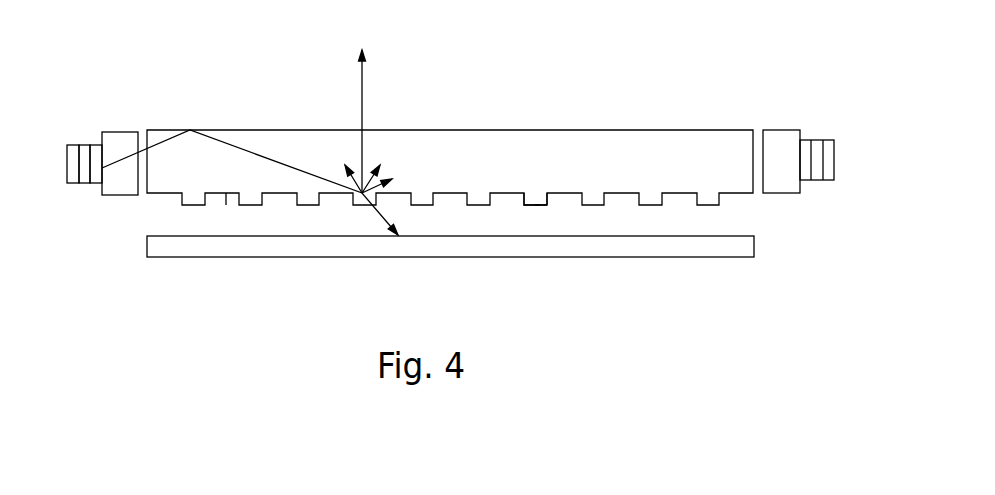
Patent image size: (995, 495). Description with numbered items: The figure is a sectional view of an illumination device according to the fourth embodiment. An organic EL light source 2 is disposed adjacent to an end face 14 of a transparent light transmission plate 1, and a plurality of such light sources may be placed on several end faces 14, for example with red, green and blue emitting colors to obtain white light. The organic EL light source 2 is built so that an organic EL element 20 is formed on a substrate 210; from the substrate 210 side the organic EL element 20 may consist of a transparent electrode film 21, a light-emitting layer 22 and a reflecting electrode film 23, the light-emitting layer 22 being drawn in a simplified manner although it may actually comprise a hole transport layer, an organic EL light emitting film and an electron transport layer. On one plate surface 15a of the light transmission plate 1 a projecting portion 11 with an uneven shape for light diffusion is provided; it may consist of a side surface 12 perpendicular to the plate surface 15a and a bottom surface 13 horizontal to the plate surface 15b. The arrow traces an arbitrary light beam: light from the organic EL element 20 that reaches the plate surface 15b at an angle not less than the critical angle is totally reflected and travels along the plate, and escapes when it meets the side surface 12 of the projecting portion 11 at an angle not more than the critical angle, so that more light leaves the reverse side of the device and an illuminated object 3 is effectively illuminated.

The light transmission plate 1 is at (535, 140).
The organic EL light source 2 is at (426, 260).
The illuminated object 3 is at (699, 248).
The projecting portion 11 is at (530, 204).
The side surface 12 is at (547, 204).
The bottom surface 13 is at (539, 204).
The end face 14 is at (150, 139).
The plate surface 15a is at (226, 193).
The plate surface 15b is at (383, 129).
The organic EL element 20 is at (67, 245).
The transparent electrode film 21 is at (97, 185).
The light-emitting layer 22 is at (86, 184).
The reflecting electrode film 23 is at (73, 184).
The substrate 210 is at (126, 195).